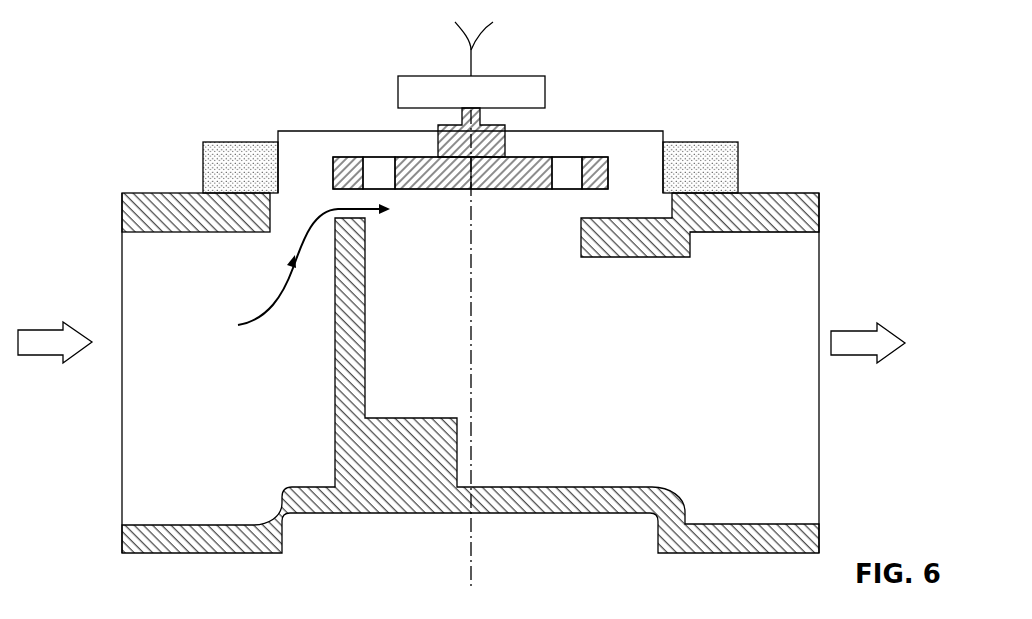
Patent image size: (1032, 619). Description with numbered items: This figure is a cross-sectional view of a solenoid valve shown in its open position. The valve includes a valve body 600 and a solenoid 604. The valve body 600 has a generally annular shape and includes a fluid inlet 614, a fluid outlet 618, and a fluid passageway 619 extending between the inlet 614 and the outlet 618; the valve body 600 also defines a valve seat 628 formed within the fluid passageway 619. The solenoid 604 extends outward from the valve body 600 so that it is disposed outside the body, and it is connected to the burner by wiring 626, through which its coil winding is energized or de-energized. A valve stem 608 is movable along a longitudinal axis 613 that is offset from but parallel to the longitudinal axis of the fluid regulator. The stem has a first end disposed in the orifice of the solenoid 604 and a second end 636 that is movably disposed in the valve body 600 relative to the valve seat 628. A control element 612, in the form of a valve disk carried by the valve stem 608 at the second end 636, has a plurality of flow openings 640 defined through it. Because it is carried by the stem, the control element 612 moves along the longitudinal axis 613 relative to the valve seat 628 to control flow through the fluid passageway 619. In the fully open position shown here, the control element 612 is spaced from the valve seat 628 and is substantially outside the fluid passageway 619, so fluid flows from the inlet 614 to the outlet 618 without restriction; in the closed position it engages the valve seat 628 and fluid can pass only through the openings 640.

The valve body 600 is at (275, 58).
The solenoid 604 is at (398, 92).
The valve stem 608 is at (472, 133).
The control element 612 is at (568, 157).
The longitudinal axis 613 is at (471, 558).
The fluid inlet 614 is at (122, 468).
The fluid outlet 618 is at (819, 305).
The fluid passageway 619 is at (697, 391).
The wiring 626 is at (492, 24).
The valve seat 628 is at (627, 233).
The second end 636 is at (478, 153).
The flow openings 640 is at (370, 180).